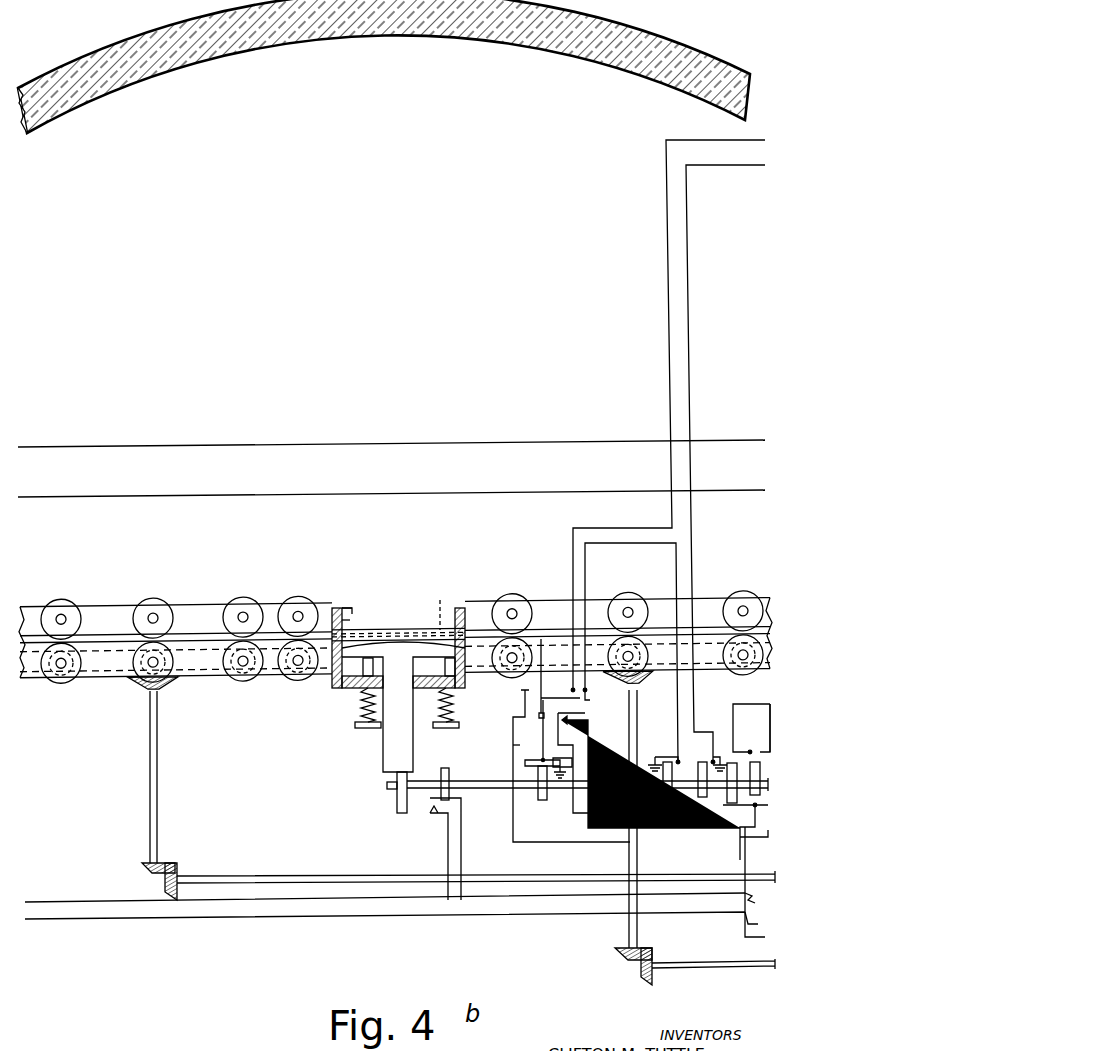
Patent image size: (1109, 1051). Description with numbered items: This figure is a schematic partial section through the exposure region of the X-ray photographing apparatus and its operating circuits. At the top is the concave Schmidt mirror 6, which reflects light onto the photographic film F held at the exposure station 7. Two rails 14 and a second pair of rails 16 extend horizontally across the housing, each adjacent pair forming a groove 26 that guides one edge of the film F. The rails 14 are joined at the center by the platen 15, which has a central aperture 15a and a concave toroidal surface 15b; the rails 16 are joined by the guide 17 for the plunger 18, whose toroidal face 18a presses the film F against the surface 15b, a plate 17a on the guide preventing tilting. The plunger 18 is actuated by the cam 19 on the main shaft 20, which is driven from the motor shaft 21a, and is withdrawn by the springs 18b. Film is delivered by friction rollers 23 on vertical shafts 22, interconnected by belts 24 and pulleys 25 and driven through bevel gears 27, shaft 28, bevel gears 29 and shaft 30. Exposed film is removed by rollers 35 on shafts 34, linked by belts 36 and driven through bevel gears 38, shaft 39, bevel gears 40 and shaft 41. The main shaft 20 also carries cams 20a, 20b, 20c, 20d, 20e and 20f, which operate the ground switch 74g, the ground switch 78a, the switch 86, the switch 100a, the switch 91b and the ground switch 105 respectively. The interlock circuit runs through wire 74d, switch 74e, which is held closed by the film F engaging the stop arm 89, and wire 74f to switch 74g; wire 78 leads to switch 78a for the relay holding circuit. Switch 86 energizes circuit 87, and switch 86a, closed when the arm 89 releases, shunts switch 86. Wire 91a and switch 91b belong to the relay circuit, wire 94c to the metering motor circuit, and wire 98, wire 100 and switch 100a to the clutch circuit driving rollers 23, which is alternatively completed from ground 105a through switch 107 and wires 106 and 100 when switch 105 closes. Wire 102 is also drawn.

The Schmidt mirror 6 is at (258, 33).
The exposure station 7 is at (324, 552).
The rails 14 is at (40, 600).
The platen 15 is at (460, 606).
The central aperture 15a is at (350, 606).
The toroidal platen surface 15b is at (362, 614).
The rails 16 is at (32, 685).
The guide 17 is at (290, 684).
The plate 17a is at (333, 690).
The plunger 18 is at (388, 760).
The toroidal face 18a is at (408, 640).
The springs 18b is at (452, 718).
The cam 19 is at (398, 805).
The main shaft 20 is at (492, 783).
The cam 20a is at (656, 789).
The cam 20b is at (691, 789).
The cam 20c is at (728, 800).
The cam 20d is at (460, 766).
The cam 20e is at (762, 798).
The cam 20f is at (543, 805).
The motor shaft 21a is at (788, 770).
The vertical shafts 22 is at (160, 605).
The friction rollers 23 is at (70, 605).
The belts 24 is at (210, 686).
The pulleys 25 is at (70, 680).
The groove 26 is at (200, 612).
The bevel gears 27 is at (165, 690).
The shaft 28 is at (160, 770).
The bevel gears 29 is at (168, 862).
The shaft 30 is at (320, 870).
The vertical shafts 34 is at (514, 618).
The rollers 35 is at (505, 605).
The belts 36 is at (664, 680).
The bevel gears 38 is at (646, 695).
The shaft 39 is at (640, 716).
The bevel gears 40 is at (622, 955).
The shaft 41 is at (758, 968).
The wire 74d is at (752, 138).
The switch 74e is at (588, 710).
The wire 74f is at (616, 543).
The ground switch 74g is at (672, 750).
The wire 78 is at (741, 172).
The ground switch 78a is at (706, 755).
The switch 86 is at (735, 822).
The switch 86a is at (604, 722).
The circuit 87 is at (762, 825).
The stop arm 89 is at (546, 636).
The wire 91a is at (768, 704).
The switch 91b is at (760, 752).
The wire 94c is at (20, 447).
The wire 98 is at (30, 920).
The wire 100 is at (28, 902).
The switch 100a is at (445, 812).
The conductor 102 is at (20, 497).
The ground switch 105 is at (540, 758).
The ground 105a is at (575, 762).
The wire 106 is at (512, 745).
The switch 107 is at (520, 706).
The photographic film F is at (440, 600).